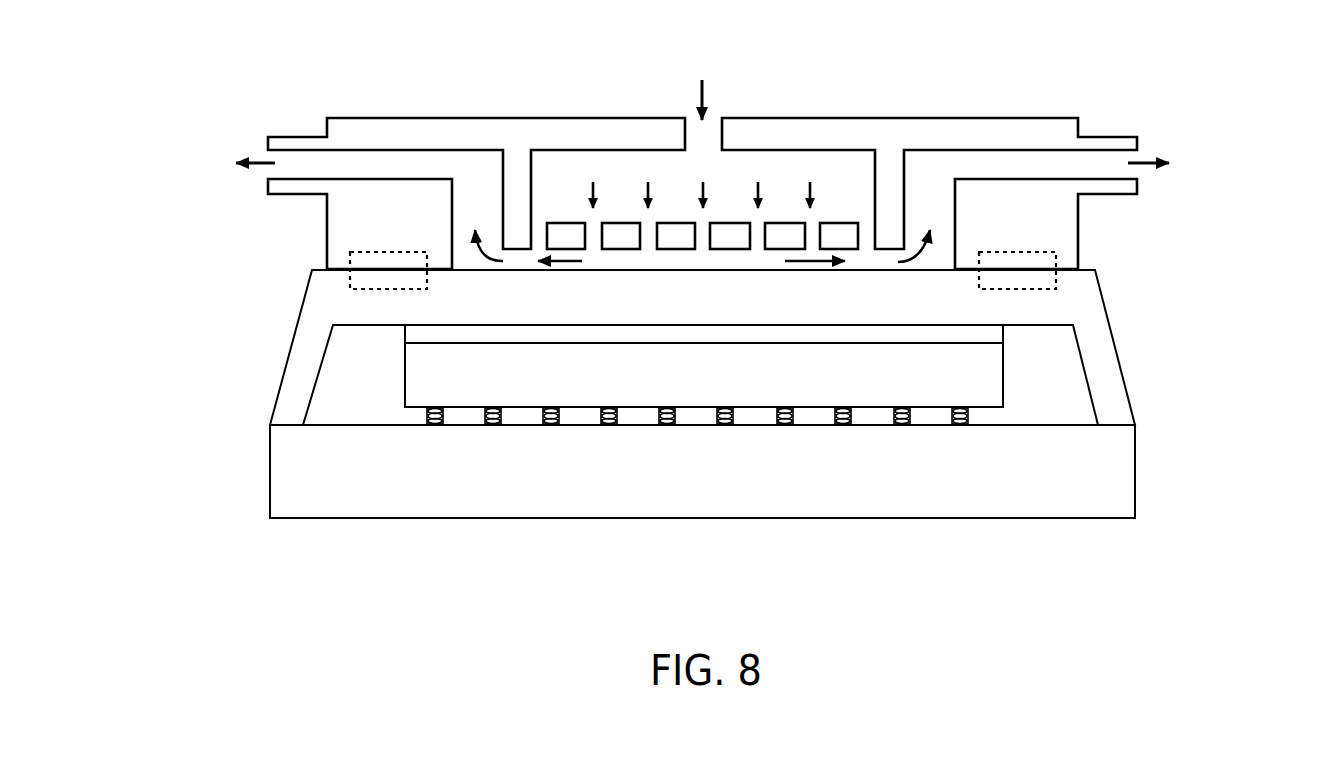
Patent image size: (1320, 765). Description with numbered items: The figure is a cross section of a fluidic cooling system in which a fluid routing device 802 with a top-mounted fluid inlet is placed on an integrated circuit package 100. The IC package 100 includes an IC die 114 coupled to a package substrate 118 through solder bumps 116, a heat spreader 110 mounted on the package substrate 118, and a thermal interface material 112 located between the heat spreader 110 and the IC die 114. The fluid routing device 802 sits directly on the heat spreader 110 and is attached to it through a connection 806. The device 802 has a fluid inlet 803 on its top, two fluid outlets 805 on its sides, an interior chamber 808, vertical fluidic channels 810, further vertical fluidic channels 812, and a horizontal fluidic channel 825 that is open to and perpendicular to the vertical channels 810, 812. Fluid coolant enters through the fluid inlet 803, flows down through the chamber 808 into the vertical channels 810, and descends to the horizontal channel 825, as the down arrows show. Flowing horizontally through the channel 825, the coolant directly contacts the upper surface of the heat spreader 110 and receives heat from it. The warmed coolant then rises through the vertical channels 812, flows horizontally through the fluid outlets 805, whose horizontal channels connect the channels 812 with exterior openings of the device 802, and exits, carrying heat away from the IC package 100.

The integrated circuit package 100 is at (225, 304).
The heat spreader 110 is at (1103, 302).
The thermal interface material 112 is at (403, 337).
The IC die 114 is at (1004, 372).
The solder bumps 116 is at (412, 415).
The package substrate 118 is at (1038, 518).
The fluid routing device 802 is at (510, 118).
The fluid inlet 803 is at (715, 122).
The fluid outlets 805 is at (272, 172).
The connection 806 is at (372, 250).
The interior chamber 808 is at (688, 176).
The vertical fluidic channels 810 is at (593, 242).
The vertical fluidic channels 812 is at (462, 205).
The horizontal fluidic channel 825 is at (770, 262).